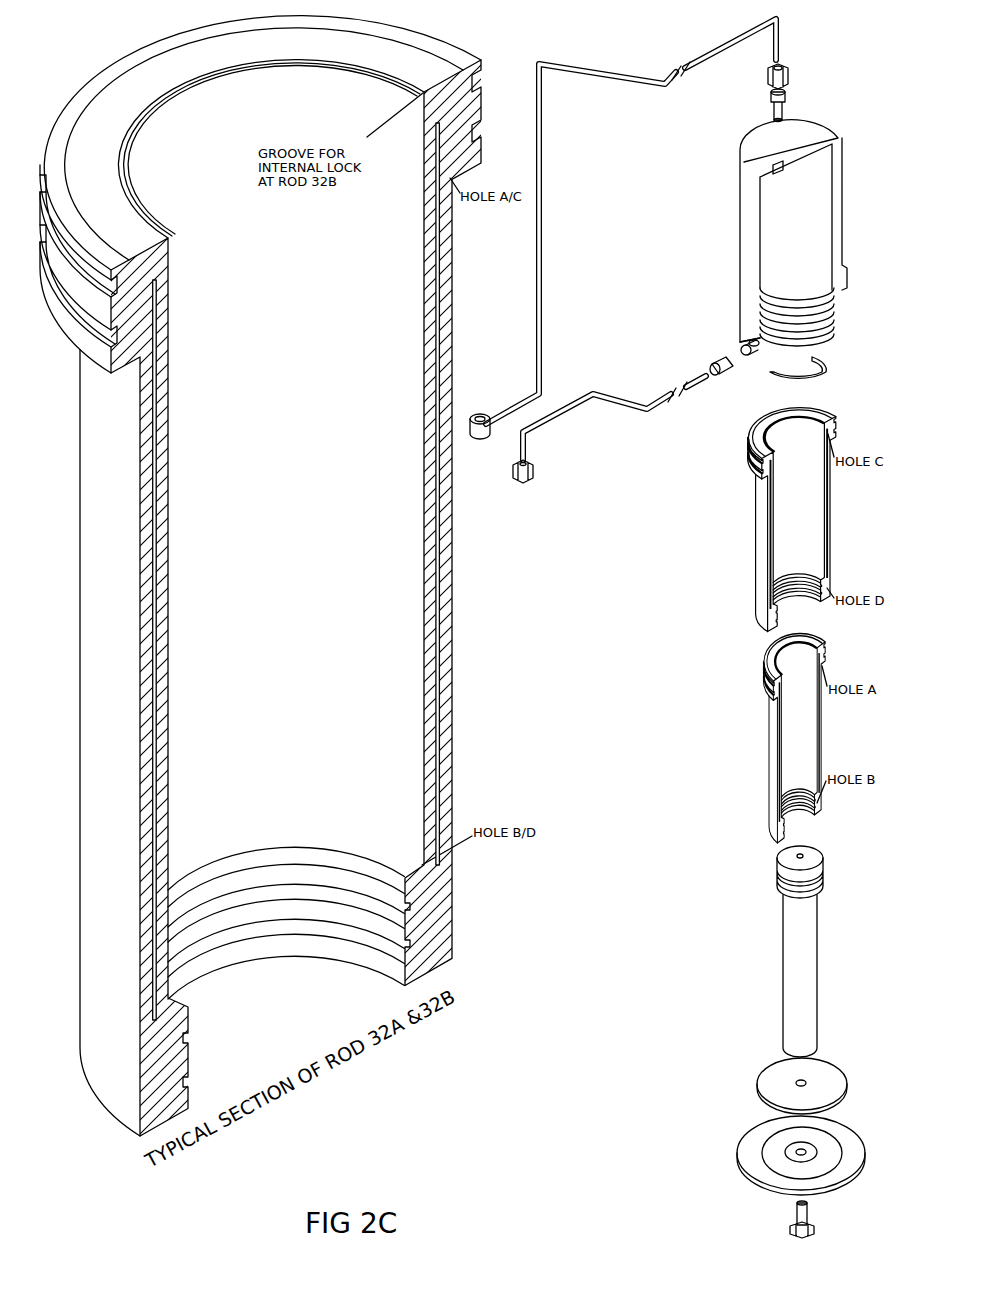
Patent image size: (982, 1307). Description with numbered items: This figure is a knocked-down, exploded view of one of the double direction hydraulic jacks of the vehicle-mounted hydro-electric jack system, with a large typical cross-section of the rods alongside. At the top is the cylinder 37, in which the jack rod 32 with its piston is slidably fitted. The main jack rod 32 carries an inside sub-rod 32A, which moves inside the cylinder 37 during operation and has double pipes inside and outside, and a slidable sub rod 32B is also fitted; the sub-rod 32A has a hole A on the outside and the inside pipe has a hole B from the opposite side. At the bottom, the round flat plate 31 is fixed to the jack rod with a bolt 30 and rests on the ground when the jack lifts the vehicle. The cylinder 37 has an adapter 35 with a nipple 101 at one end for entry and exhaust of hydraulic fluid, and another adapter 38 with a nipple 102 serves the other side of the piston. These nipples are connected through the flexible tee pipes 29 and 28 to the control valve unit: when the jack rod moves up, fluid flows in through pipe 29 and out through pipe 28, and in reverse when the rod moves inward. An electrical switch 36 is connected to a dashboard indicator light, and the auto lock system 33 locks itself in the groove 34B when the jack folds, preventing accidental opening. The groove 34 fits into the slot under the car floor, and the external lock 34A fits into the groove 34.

The flexible tee pipe 28 is at (610, 394).
The flexible tee pipe 29 is at (543, 349).
The bolt 30 is at (797, 1228).
The round flat plate 31 is at (757, 1137).
The jack rod 32 is at (786, 913).
The sub-rod 32A is at (772, 759).
The slidable sub rod 32B is at (100, 508).
The auto lock system 33 is at (757, 1080).
The groove 34 is at (836, 330).
The external lock 34A is at (834, 340).
The groove 34B is at (877, 316).
The adapter 35 is at (760, 364).
The electrical switch 36 is at (742, 341).
The cylinder 37 is at (747, 192).
The adapter 38 is at (770, 106).
The nipple 101 is at (713, 364).
The nipple 102 is at (768, 86).